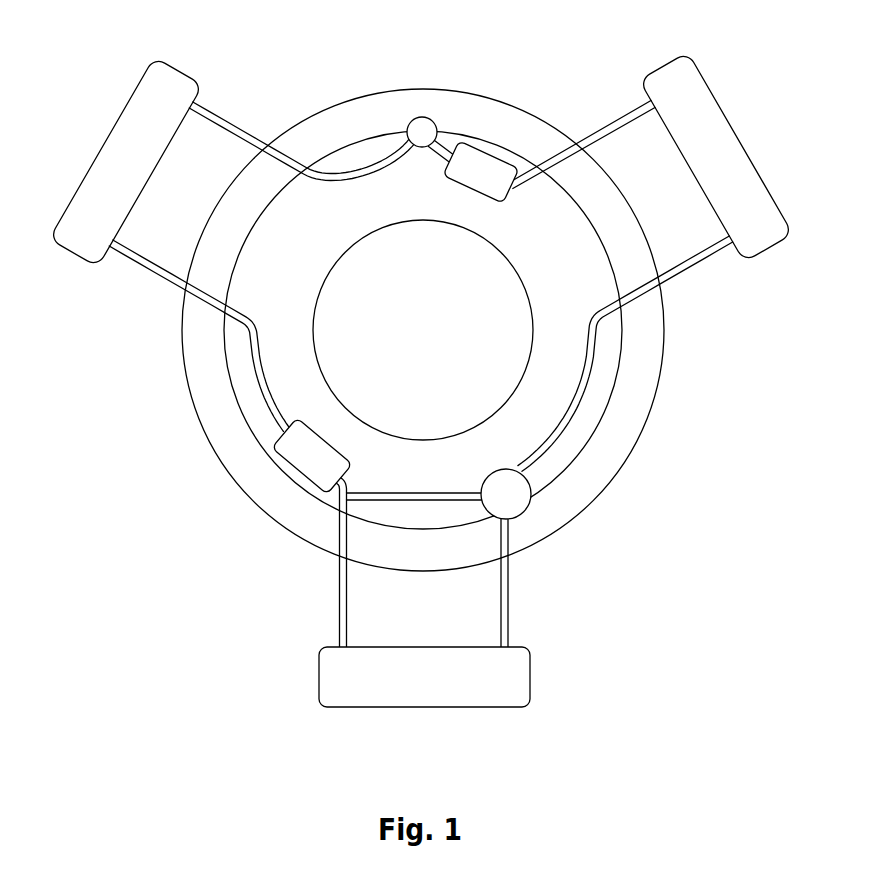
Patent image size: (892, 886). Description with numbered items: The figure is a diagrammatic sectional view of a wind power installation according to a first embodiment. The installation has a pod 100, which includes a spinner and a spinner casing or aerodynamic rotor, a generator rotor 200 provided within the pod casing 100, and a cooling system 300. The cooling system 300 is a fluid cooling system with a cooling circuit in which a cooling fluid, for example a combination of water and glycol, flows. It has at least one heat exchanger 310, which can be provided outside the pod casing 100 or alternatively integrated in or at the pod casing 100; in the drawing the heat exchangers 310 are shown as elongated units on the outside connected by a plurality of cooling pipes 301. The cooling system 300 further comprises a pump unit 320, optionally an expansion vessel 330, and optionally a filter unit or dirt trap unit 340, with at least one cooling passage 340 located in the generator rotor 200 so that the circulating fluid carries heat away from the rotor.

The pod 100 is at (658, 380).
The generator rotor 200 is at (432, 108).
The cooling system 300 is at (210, 118).
The cooling pipes 301 is at (150, 280).
The heat exchanger 310 is at (137, 113).
The pump unit 320 is at (313, 462).
The expansion vessel 330 is at (513, 498).
The filter unit or dirt trap unit 340 is at (412, 131).